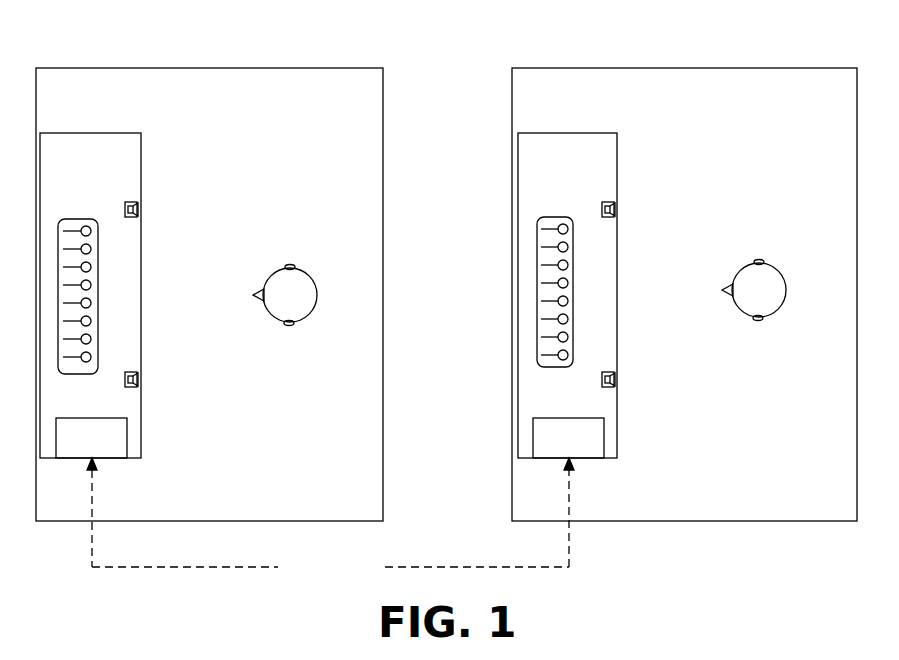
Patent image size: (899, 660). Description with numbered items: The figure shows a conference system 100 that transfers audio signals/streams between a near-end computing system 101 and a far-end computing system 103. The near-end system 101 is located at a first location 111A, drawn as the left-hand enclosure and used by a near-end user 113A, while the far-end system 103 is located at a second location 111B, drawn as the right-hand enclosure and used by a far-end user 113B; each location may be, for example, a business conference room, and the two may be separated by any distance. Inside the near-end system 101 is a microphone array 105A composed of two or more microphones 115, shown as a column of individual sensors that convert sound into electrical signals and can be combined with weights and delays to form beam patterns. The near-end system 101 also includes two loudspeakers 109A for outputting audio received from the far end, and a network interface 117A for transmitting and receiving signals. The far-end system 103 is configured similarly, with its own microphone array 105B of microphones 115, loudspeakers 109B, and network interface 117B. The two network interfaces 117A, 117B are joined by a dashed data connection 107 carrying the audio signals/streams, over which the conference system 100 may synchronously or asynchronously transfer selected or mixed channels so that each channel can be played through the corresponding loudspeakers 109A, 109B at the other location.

The conference system 100 is at (50, 50).
The near-end computing system 101 is at (90, 133).
The far-end computing system 103 is at (563, 133).
The microphone array 105A is at (78, 218).
The microphone array 105B is at (556, 216).
The data connection 107 is at (427, 566).
The loudspeakers 109A is at (128, 201).
The loudspeakers 109B is at (605, 201).
The first location 111A is at (320, 67).
The second location 111B is at (545, 67).
The near-end user 113A is at (290, 285).
The far-end user 113B is at (759, 280).
The microphones 115 is at (88, 361).
The network interface 117A is at (91, 438).
The network interface 117B is at (568, 438).